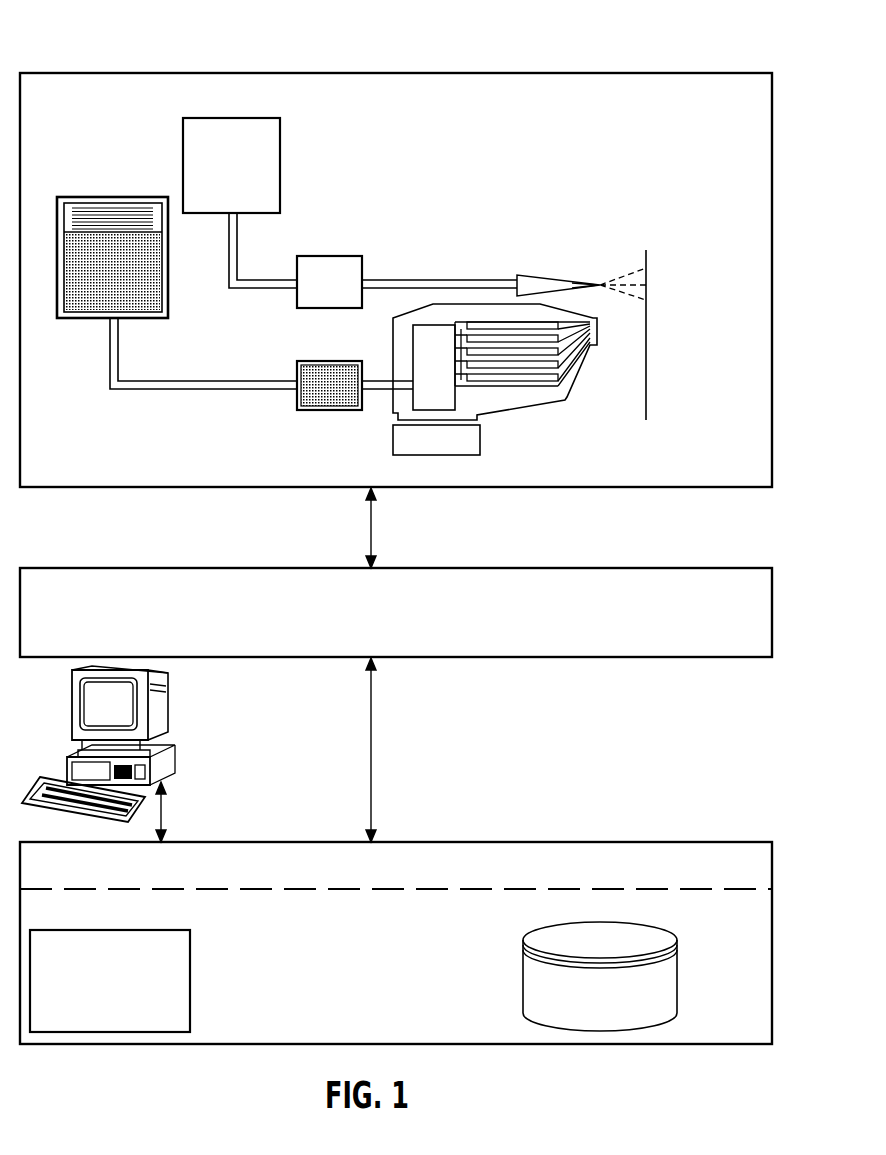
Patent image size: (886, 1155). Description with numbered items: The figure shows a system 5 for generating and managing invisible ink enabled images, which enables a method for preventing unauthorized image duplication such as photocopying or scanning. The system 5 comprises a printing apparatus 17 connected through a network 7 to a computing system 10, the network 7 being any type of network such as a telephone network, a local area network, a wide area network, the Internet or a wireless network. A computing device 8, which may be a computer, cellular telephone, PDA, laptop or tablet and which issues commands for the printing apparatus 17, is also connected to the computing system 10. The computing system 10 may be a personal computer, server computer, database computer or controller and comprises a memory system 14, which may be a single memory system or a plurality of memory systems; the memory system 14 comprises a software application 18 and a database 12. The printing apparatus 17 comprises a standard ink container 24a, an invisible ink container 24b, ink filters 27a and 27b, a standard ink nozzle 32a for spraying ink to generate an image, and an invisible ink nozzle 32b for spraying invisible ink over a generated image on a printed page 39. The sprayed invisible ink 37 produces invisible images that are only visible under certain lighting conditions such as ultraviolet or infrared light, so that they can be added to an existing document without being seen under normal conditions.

The system 5 is at (78, 62).
The printing apparatus 17 is at (678, 72).
The standard ink container 24a is at (113, 197).
The invisible ink container 24b is at (229, 118).
The ink filter 27a is at (339, 361).
The ink filter 27b is at (327, 256).
The standard ink nozzle 32a is at (519, 412).
The invisible ink spray nozzle 32b is at (538, 275).
The invisible ink 37 is at (619, 269).
The printed page 39 is at (660, 368).
The network 7 is at (367, 640).
The computing device 8 is at (168, 705).
The computing system 10 is at (672, 842).
The memory system 14 is at (406, 968).
The software application 18 is at (94, 1027).
The database 12 is at (583, 1020).